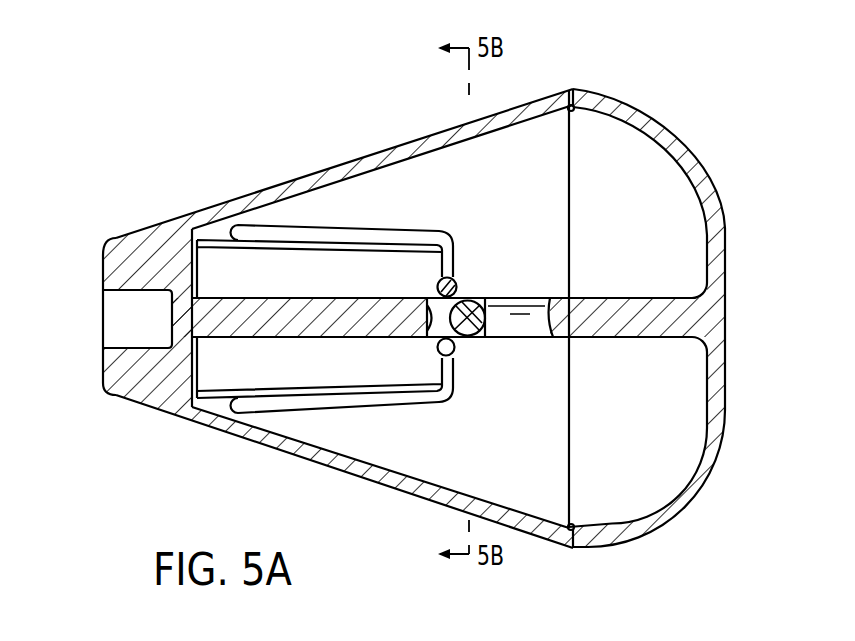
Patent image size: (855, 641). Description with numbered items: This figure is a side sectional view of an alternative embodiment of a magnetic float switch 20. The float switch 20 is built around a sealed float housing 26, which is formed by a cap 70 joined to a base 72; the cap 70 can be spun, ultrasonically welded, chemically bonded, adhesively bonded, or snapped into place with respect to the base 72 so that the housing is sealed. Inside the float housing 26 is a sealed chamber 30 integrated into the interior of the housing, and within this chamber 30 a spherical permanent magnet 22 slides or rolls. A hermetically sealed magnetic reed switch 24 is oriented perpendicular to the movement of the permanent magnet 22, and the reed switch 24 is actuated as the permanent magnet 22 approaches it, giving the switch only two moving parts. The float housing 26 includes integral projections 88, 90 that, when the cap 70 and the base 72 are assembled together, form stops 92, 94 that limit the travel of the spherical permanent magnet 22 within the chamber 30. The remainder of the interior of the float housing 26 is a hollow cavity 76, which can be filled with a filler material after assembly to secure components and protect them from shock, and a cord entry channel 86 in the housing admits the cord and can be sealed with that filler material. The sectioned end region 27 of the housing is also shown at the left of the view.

The float switch 20 is at (363, 64).
The permanent magnet 22 is at (483, 336).
The magnetic reed switch 24 is at (457, 281).
The float housing 26 is at (620, 95).
The end wall 27 is at (160, 408).
The chamber 30 is at (528, 327).
The cap 70 is at (650, 110).
The base 72 is at (423, 150).
The hollow cavity 76 is at (382, 445).
The cord entry channel 86 is at (133, 315).
The integral projection 88 is at (624, 340).
The integral projection 90 is at (323, 315).
The stop 92 is at (550, 298).
The stop 94 is at (440, 297).